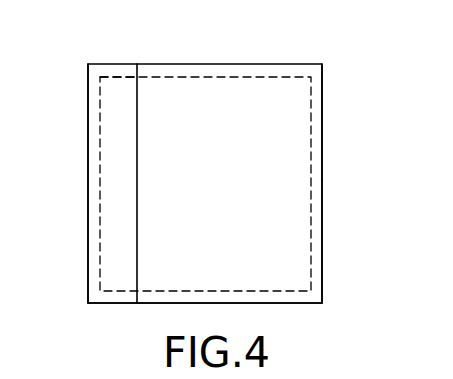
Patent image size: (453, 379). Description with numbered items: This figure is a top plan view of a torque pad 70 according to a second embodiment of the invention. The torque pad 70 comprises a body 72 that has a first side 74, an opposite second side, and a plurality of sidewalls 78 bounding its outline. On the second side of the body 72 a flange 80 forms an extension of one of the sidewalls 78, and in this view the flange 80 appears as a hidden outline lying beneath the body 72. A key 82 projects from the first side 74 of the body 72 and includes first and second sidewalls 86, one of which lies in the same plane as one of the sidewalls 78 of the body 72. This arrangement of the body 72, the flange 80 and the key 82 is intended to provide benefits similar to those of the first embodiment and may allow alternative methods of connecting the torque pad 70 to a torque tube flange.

The torque pad 70 is at (287, 48).
The body 72 is at (288, 118).
The first side 74 is at (280, 252).
The sidewalls 78 is at (275, 303).
The flange 80 is at (311, 198).
The key 82 is at (118, 90).
The first and second sidewalls 86 is at (88, 182).